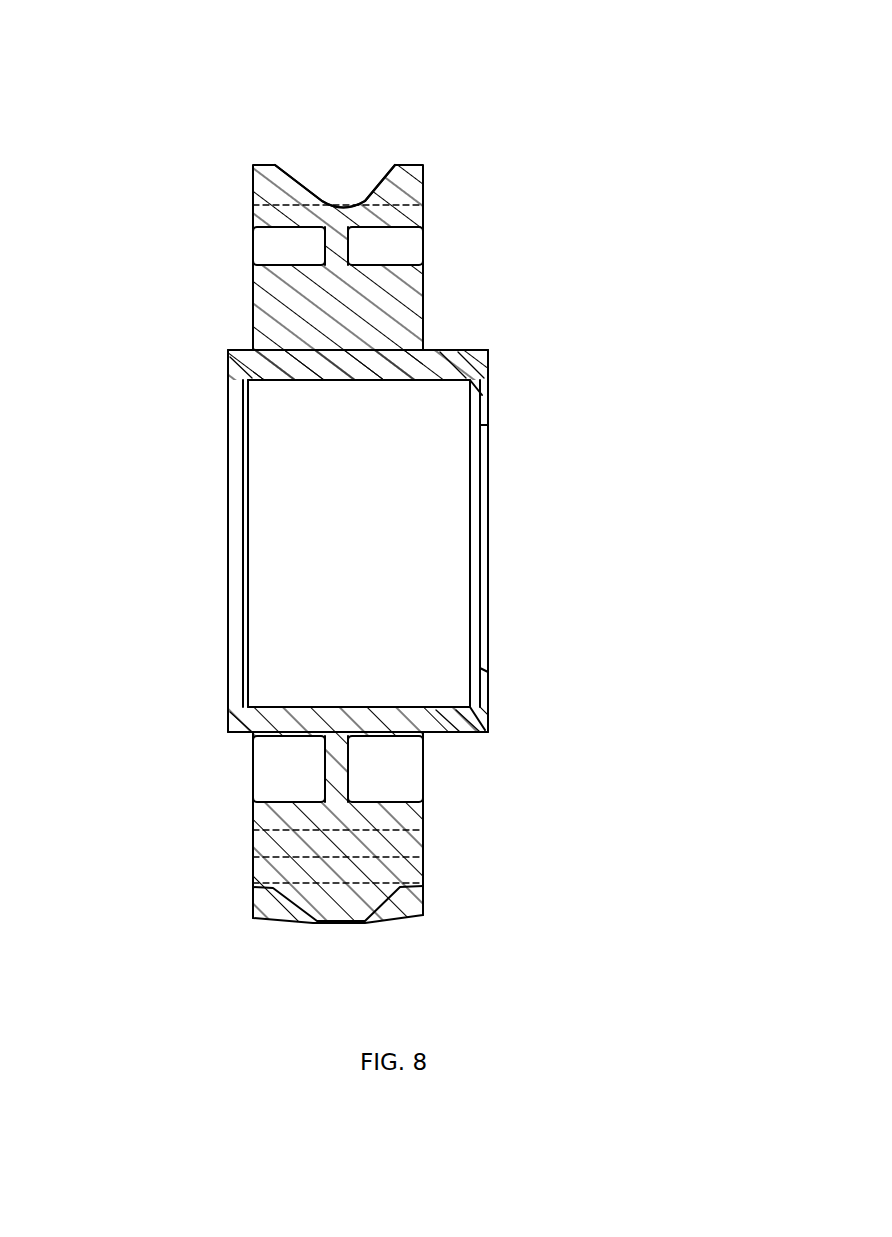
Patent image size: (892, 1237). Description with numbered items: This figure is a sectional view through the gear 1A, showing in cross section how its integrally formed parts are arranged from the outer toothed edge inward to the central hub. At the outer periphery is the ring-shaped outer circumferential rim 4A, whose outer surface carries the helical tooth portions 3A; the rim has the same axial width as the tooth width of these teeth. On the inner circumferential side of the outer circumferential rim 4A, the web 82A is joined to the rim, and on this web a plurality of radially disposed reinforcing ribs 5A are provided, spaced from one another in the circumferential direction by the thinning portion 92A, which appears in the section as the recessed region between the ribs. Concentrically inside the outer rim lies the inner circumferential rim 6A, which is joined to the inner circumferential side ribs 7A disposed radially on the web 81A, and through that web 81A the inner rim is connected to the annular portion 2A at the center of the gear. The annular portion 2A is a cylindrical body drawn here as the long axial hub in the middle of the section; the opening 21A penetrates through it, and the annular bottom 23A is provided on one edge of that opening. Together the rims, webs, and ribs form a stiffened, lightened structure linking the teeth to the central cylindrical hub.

The gear 1A is at (404, 23).
The annular portion 2A is at (254, 364).
The opening 21A is at (228, 535).
The annular bottom 23A is at (490, 623).
The tooth portions 3A is at (253, 183).
The outer circumferential rim 4A is at (262, 213).
The reinforcing ribs 5A is at (266, 849).
The inner circumferential rim 6A is at (262, 277).
The inner circumferential side ribs 7A is at (253, 305).
The web 81A is at (335, 328).
The web 82A is at (253, 247).
The thinning portion 92A is at (297, 226).